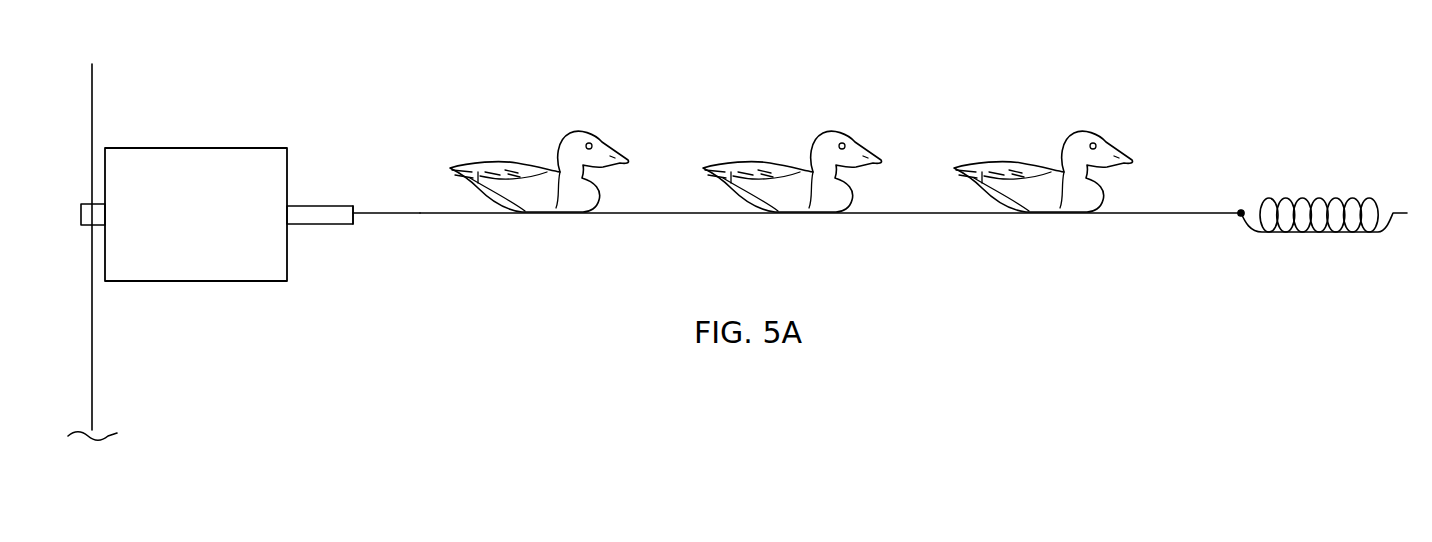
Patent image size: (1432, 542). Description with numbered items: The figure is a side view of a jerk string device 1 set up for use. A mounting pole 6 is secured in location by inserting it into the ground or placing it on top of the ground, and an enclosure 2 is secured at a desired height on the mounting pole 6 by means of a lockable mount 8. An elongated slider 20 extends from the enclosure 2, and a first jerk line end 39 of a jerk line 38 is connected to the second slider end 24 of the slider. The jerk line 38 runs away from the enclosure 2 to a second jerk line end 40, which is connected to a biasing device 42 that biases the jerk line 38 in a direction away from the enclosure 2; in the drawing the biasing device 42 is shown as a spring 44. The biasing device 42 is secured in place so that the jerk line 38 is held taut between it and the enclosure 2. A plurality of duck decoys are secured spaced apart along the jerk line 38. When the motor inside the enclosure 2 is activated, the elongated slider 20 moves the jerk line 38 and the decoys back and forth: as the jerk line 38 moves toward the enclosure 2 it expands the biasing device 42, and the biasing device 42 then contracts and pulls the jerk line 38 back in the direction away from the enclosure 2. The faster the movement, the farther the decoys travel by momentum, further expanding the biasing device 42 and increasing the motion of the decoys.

The jerk string device 1 is at (196, 210).
The enclosure 2 is at (162, 281).
The mounting pole 6 is at (92, 95).
The lockable mount 8 is at (81, 225).
The elongated slider 20 is at (308, 206).
The second slider end 24 is at (353, 204).
The jerk line 38 is at (1193, 215).
The first jerk line end 39 is at (363, 215).
The second jerk line end 40 is at (1241, 212).
The biasing device 42 is at (1324, 145).
The spring 44 is at (1347, 198).